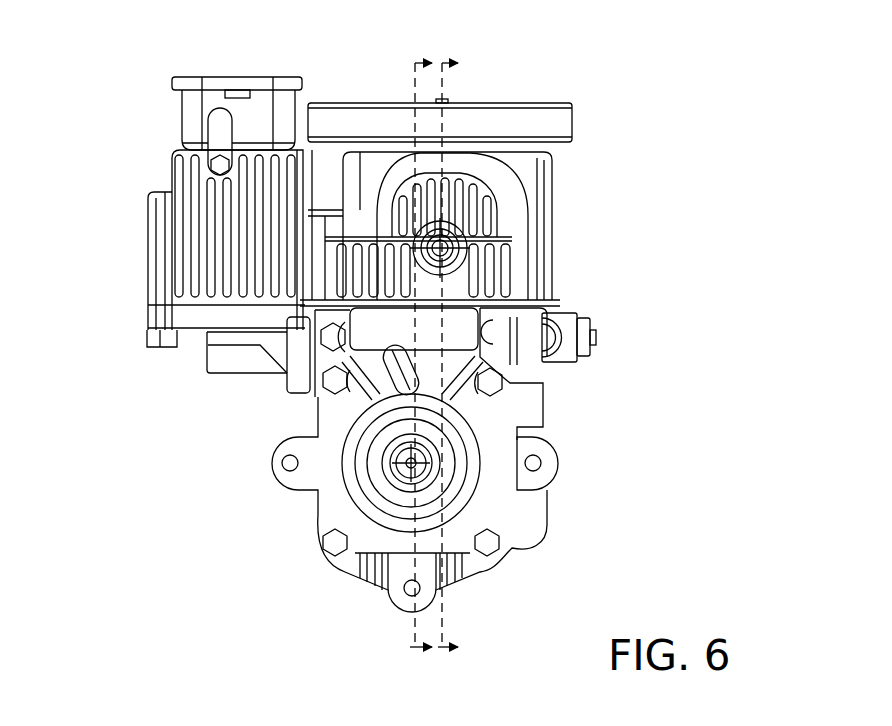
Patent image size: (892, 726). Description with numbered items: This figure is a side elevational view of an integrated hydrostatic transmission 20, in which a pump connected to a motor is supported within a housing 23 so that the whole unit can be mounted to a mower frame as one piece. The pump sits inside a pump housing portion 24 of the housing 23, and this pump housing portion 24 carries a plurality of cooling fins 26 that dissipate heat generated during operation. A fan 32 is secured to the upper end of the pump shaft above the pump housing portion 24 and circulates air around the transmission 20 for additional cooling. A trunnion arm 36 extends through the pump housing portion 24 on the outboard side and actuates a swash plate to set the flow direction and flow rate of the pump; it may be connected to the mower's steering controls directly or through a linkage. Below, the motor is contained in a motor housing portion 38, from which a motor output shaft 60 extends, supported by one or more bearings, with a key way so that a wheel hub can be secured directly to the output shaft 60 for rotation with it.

The integrated hydrostatic transmission 20 is at (122, 140).
The housing 23 is at (560, 218).
The pump housing portion 24 is at (160, 213).
The cooling fins 26 is at (176, 255).
The fan 32 is at (573, 120).
The trunnion arm 36 is at (505, 258).
The motor housing portion 38 is at (520, 520).
The motor output shaft 60 is at (408, 468).